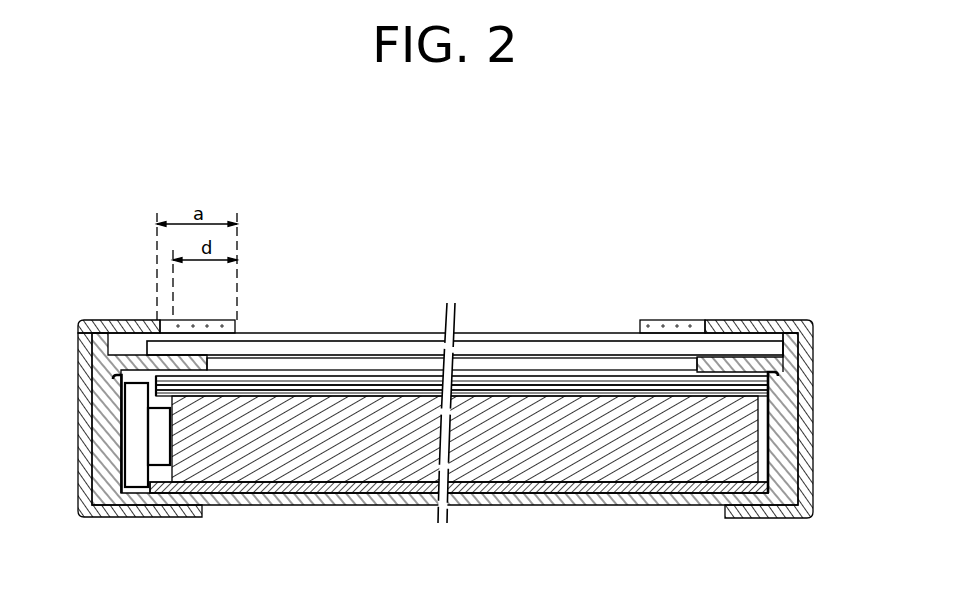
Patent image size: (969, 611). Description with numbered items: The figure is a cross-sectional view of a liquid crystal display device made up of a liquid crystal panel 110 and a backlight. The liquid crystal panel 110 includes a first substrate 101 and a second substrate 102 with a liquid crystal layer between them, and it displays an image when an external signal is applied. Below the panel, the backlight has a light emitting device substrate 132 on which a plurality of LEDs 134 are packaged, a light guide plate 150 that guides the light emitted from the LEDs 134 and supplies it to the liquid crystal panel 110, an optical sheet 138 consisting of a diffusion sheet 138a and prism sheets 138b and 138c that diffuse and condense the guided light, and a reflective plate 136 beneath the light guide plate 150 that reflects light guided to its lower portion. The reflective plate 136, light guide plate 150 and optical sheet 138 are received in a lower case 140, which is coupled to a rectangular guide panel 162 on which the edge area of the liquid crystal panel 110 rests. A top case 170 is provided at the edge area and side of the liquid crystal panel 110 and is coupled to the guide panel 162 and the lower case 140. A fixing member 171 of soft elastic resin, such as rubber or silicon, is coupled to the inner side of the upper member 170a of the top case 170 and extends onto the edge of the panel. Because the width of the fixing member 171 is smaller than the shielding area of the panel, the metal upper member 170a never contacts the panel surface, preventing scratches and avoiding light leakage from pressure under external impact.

The liquid crystal panel 110 is at (394, 326).
The first substrate 101 is at (309, 355).
The second substrate 102 is at (350, 341).
The light emitting device substrate 132 is at (137, 477).
The LEDs 134 is at (157, 455).
The reflective plate 136 is at (598, 487).
The optical sheet 138 is at (462, 302).
The diffusion sheet 138a is at (605, 392).
The prism sheet 138b is at (552, 386).
The prism sheet 138c is at (512, 377).
The lower case 140 is at (777, 467).
The light guide plate 150 is at (505, 472).
The guide panel 162 is at (793, 418).
The top case 170 is at (70, 524).
The upper member 170a is at (125, 320).
The fixing member 171 is at (238, 320).